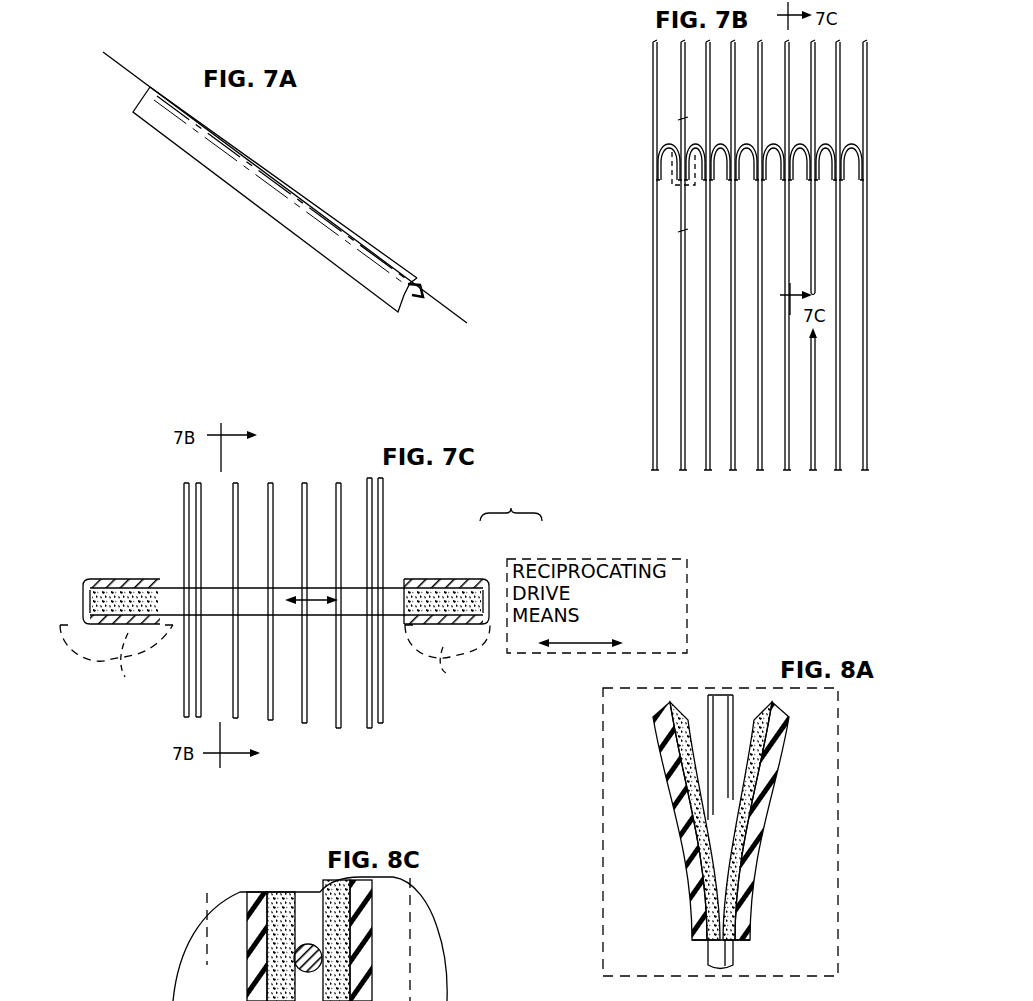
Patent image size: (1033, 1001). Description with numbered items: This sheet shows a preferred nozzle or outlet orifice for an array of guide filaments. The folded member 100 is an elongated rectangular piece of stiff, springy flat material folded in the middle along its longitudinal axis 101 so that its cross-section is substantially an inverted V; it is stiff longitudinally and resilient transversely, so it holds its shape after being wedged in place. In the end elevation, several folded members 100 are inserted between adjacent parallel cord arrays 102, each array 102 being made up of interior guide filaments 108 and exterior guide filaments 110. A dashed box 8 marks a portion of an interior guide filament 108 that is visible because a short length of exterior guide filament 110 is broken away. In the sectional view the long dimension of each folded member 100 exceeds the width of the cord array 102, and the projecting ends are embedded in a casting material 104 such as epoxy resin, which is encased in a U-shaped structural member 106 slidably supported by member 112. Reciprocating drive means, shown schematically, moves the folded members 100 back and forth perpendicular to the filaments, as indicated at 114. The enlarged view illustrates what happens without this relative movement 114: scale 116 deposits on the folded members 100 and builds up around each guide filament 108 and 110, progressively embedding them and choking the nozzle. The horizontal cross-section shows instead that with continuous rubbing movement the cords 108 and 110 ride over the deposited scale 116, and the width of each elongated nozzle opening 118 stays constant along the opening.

In FIG. 7B, the dashed box 8 is at (660, 172).
In FIG. 7A, the folded member 100 is at (250, 182).
In FIG. 7B, the folded member 100 is at (666, 143).
In FIG. 7C, the folded member 100 is at (175, 598).
In FIG. 8A, the folded member 100 is at (763, 763).
In FIG. 8C, the folded member 100 is at (362, 927).
In FIG. 7A, the longitudinal axis 101 is at (123, 70).
In FIG. 7B, the cord array 102 is at (676, 400).
In FIG. 7C, the cord array 102 is at (286, 470).
In FIG. 7C, the casting material 104 is at (108, 607).
In FIG. 7C, the U-shaped structural member 106 is at (125, 579).
In FIG. 7B, the interior guide filament 108 is at (683, 128).
In FIG. 7C, the interior guide filament 108 is at (198, 510).
In FIG. 8A, the interior guide filament 108 is at (740, 670).
In FIG. 8C, the interior guide filament 108 is at (303, 943).
In FIG. 7B, the exterior guide filament 110 is at (681, 288).
In FIG. 7C, the exterior guide filament 110 is at (268, 521).
In FIG. 7C, the supporting member 112 is at (118, 674).
In FIG. 7C, the back-and-forth horizontal movement 114 is at (313, 603).
In FIG. 8A, the scale 116 is at (753, 705).
In FIG. 8C, the scale 116 is at (277, 917).
In FIG. 8C, the elongated nozzle opening 118 is at (342, 988).